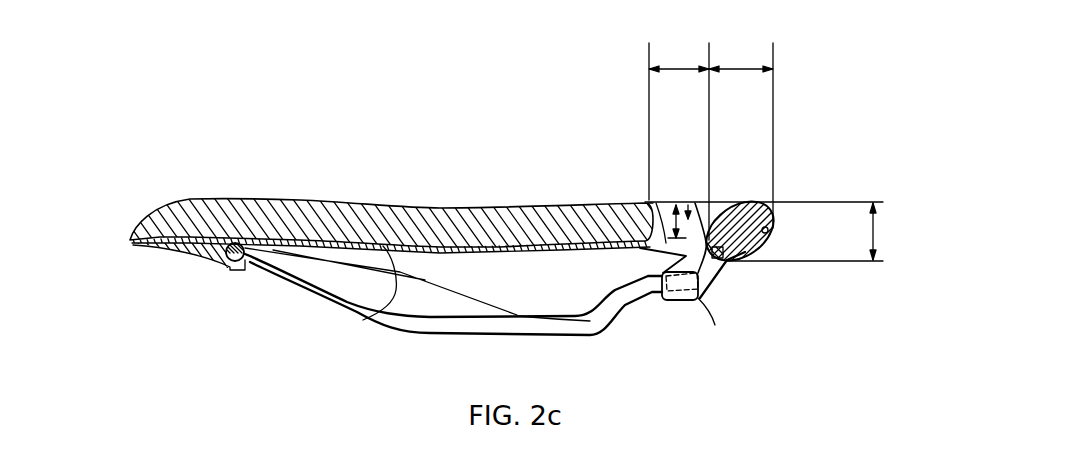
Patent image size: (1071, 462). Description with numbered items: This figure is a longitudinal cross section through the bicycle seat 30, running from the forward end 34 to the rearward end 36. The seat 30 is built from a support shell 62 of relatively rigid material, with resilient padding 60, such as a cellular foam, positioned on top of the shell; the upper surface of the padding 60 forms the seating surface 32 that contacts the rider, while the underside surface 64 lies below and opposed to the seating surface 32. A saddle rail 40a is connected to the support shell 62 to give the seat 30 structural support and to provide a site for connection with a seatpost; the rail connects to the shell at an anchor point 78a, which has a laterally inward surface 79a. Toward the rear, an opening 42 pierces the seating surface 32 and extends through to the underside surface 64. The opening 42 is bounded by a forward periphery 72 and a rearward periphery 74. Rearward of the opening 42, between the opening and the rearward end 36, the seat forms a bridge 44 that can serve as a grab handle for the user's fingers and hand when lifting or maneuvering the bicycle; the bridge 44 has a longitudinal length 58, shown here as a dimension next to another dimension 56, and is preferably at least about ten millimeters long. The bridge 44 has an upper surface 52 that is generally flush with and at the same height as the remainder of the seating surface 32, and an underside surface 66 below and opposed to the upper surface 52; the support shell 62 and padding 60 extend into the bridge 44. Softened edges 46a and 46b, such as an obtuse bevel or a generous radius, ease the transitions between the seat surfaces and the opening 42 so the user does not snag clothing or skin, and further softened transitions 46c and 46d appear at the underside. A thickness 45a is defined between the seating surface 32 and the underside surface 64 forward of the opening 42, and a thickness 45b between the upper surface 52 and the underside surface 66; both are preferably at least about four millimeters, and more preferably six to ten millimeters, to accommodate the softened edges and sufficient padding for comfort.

The seat 30 is at (188, 330).
The seating surface 32 is at (410, 205).
The forward end 34 is at (128, 238).
The rearward end 36 is at (777, 230).
The saddle rail 40a is at (430, 326).
The opening 42 is at (697, 203).
The bridge 44 is at (722, 203).
The thickness 45a is at (677, 203).
The thickness 45b is at (878, 233).
The softened edge 46a is at (648, 203).
The softened edge 46b is at (703, 203).
The third gap 46c is at (697, 261).
The fourth gap 46d is at (605, 248).
The upper surface 52 is at (731, 203).
The first distance 56 is at (680, 66).
The longitudinal length 58 is at (740, 66).
The resilient padding 60 is at (263, 220).
The support shell 62 is at (363, 320).
The underside surface 64 is at (563, 248).
The underside surface 66 is at (748, 263).
The forward periphery 72 is at (666, 203).
The rearward periphery 74 is at (714, 298).
The anchor point 78a is at (682, 300).
The laterally inward surface 79a is at (678, 288).